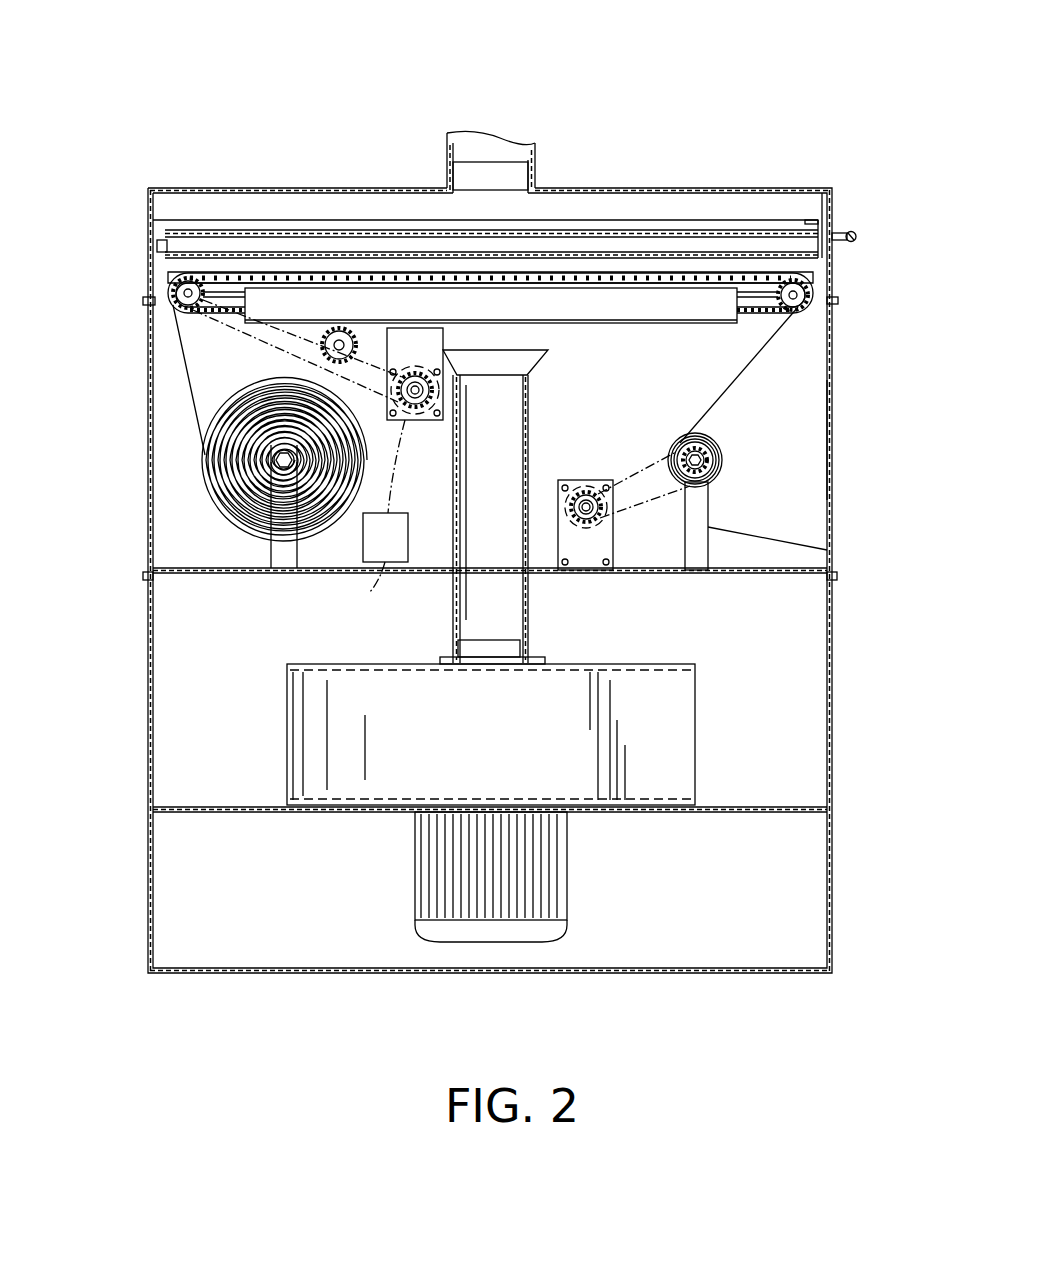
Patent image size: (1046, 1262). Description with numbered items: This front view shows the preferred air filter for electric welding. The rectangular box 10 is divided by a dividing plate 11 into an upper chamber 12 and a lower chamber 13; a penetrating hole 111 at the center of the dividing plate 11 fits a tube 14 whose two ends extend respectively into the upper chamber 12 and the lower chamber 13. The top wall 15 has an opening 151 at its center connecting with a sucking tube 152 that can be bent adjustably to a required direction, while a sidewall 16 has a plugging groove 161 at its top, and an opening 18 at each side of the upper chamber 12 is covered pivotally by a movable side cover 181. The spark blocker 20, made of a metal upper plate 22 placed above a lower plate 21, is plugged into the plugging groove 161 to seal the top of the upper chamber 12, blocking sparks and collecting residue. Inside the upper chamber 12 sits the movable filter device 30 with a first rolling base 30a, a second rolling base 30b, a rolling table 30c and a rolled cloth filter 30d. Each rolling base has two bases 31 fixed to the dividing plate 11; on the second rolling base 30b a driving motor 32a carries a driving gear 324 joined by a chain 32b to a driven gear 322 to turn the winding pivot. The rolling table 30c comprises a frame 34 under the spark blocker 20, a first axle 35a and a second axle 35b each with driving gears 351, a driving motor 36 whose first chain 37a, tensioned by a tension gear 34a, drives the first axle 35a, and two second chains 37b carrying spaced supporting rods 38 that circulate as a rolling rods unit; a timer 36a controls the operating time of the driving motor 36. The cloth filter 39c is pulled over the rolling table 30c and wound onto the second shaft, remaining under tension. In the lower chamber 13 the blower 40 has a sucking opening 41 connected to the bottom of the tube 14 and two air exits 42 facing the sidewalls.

The box 10 is at (836, 622).
The dividing plate 11 is at (205, 575).
The penetrating hole 111 is at (453, 592).
The upper chamber 12 is at (787, 400).
The lower chamber 13 is at (785, 735).
The tube 14 is at (530, 595).
The top wall 15 is at (600, 187).
The opening 151 is at (495, 170).
The sucking tube 152 is at (445, 133).
The sidewall 16 is at (832, 835).
The plugging groove 161 is at (838, 232).
The opening 18 is at (825, 440).
The movable side cover 181 is at (832, 490).
The spark blocker 20 is at (856, 238).
The lower plate 21 is at (738, 252).
The upper plate 22 is at (688, 233).
The movable filter device 30 is at (178, 396).
The first rolling base 30a is at (280, 510).
The second rolling base 30b is at (832, 551).
The rolling table 30c is at (793, 295).
The rolled cloth filter 30d is at (205, 475).
The base 31 is at (283, 552).
The driving motor 32a is at (582, 537).
The chain 32b is at (660, 460).
The driven gear 322 is at (700, 435).
The driving gear 324 is at (613, 505).
The frame 34 is at (643, 323).
The tension gear 34a is at (339, 328).
The first axle 35a is at (188, 293).
The second axle 35b is at (800, 305).
The driving gear 351 is at (795, 330).
The driving motor 36 is at (443, 392).
The timer 36a is at (370, 592).
The first chain 37a is at (270, 318).
The second chain 37b is at (387, 272).
The supporting rod 38 is at (258, 272).
The cloth filter 39c is at (218, 455).
The blower 40 is at (695, 732).
The sucking opening 41 is at (510, 633).
The air exit 42 is at (300, 735).